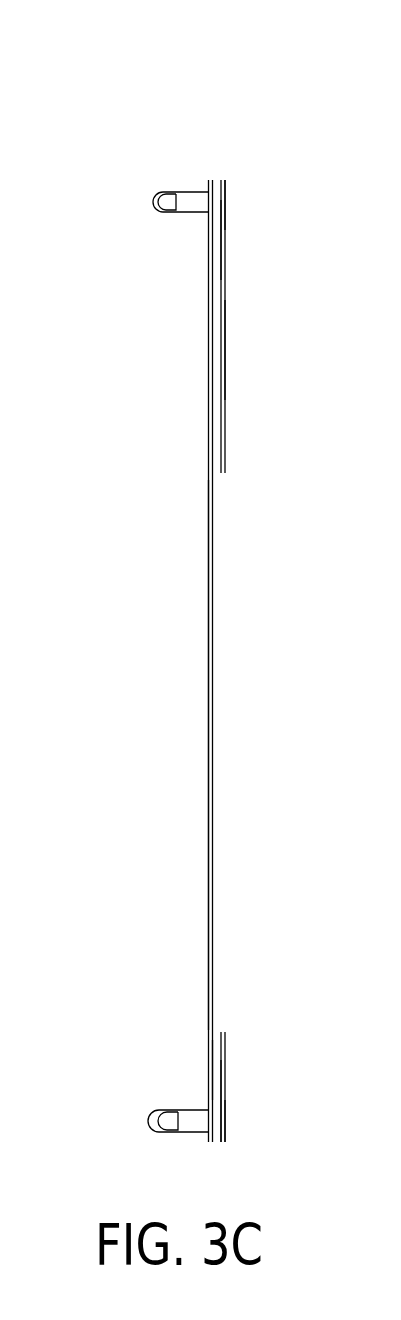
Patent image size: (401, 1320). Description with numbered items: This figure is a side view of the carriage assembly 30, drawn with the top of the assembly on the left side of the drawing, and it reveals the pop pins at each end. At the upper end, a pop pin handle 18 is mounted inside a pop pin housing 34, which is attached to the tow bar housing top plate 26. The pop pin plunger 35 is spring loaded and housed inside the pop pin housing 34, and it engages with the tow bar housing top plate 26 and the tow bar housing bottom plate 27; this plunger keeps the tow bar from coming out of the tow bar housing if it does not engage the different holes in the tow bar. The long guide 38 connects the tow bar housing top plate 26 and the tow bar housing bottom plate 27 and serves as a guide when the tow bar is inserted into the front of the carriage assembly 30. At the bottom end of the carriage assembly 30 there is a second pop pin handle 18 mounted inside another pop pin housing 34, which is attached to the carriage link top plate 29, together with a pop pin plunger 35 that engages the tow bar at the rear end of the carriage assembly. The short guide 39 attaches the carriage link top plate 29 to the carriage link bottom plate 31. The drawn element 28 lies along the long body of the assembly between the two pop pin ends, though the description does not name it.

The carriage assembly 30 is at (196, 124).
The pop pin handle 18 is at (152, 205).
The pop pin housing 34 is at (190, 200).
The pop pin plunger 35 is at (220, 198).
The short guide 39 is at (222, 243).
The long guide 38 is at (216, 349).
The tow bar housing top plate 26 is at (208, 413).
The tow bar housing bottom plate 27 is at (222, 452).
The inner tube 28 is at (207, 668).
The carriage link top plate 29 is at (217, 1070).
The carriage link bottom plate 31 is at (222, 1070).